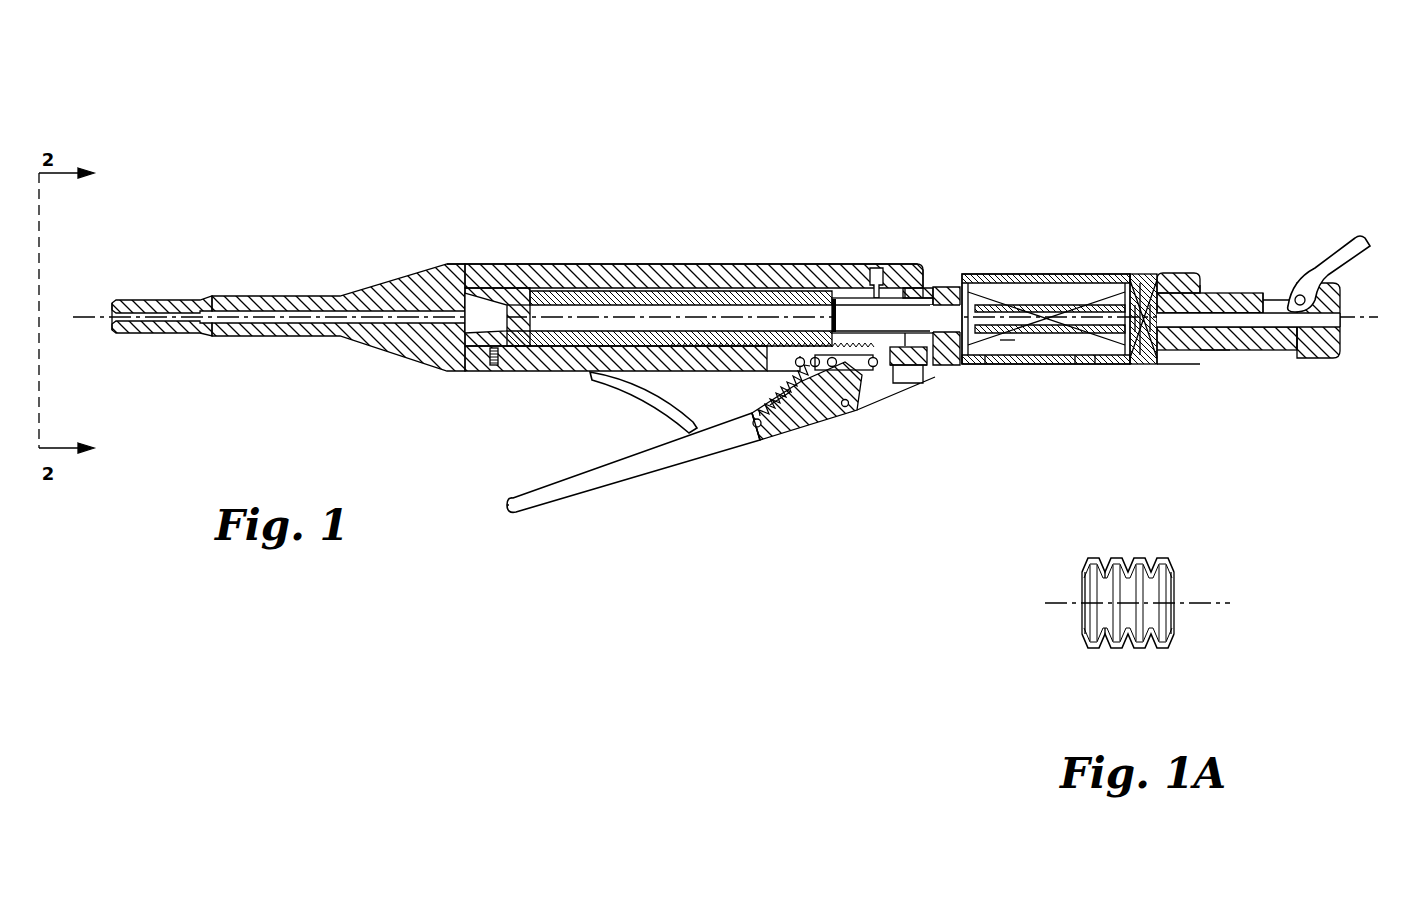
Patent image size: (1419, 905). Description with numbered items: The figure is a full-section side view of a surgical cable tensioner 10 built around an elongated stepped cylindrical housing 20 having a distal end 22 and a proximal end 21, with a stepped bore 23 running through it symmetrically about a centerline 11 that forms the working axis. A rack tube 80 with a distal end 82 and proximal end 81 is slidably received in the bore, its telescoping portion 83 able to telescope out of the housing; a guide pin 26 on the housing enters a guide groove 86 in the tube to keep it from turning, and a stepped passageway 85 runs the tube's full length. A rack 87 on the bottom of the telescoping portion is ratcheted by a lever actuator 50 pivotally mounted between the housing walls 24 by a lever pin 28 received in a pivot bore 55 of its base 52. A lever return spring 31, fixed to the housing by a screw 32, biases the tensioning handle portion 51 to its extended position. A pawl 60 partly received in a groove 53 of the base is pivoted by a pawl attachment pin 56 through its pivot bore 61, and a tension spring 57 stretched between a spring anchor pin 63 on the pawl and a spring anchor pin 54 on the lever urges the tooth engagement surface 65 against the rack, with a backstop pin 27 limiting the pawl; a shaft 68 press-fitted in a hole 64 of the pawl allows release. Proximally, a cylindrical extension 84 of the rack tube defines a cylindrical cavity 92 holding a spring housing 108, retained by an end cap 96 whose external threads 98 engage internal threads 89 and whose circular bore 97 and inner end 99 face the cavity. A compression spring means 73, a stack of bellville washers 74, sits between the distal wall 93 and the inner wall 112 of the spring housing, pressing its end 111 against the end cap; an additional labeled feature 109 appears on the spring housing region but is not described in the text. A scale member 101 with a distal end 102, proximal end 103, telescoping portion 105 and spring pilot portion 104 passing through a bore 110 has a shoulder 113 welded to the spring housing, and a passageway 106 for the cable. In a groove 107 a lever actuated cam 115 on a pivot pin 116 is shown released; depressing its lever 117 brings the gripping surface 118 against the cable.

In FIG. 1, the surgical cable tensioner 10 is at (1060, 102).
In FIG. 1, the centerline 11 is at (87, 318).
In FIG. 1A, the centerline 11 is at (1213, 603).
In FIG. 1, the housing 20 is at (500, 266).
In FIG. 1, the proximal end 21 is at (930, 275).
In FIG. 1, the distal end 22 is at (110, 336).
In FIG. 1, the stepped bore 23 is at (275, 305).
In FIG. 1, the housing walls 24 is at (872, 372).
In FIG. 1, the guide pin 26 is at (878, 268).
In FIG. 1, the backstop pin 27 is at (790, 375).
In FIG. 1, the lever pin 28 is at (828, 412).
In FIG. 1, the lever return spring 31 is at (598, 390).
In FIG. 1, the screw 32 is at (520, 386).
In FIG. 1, the lever actuator 50 is at (700, 452).
In FIG. 1, the tensioning handle portion 51 is at (545, 520).
In FIG. 1, the base 52 is at (820, 402).
In FIG. 1, the groove 53 is at (775, 420).
In FIG. 1, the spring anchor pin 54 is at (757, 428).
In FIG. 1, the pivot bore 55 is at (845, 408).
In FIG. 1, the pawl attachment pin 56 is at (853, 368).
In FIG. 1, the tension spring 57 is at (762, 432).
In FIG. 1, the pawl 60 is at (935, 362).
In FIG. 1, the pivot bore 61 is at (843, 298).
In FIG. 1, the spring anchor pin 63 is at (797, 404).
In FIG. 1, the hole 64 is at (895, 367).
In FIG. 1, the tooth engagement surface 65 is at (975, 282).
In FIG. 1, the shaft 68 is at (903, 272).
In FIG. 1, the compression spring means 73 is at (1020, 282).
In FIG. 1A, the compression spring means 73 is at (1180, 550).
In FIG. 1A, the bellville washers 74 is at (1083, 642).
In FIG. 1, the rack tube 80 is at (995, 280).
In FIG. 1, the proximal end 81 is at (1185, 372).
In FIG. 1, the distal end 82 is at (445, 367).
In FIG. 1, the telescoping portion 83 is at (490, 382).
In FIG. 1, the cylindrical extension 84 is at (1085, 282).
In FIG. 1, the stepped passageway 85 is at (575, 296).
In FIG. 1, the guide groove 86 is at (630, 300).
In FIG. 1, the rack 87 is at (710, 347).
In FIG. 1, the internal threads 89 is at (1188, 290).
In FIG. 1, the cylindrical cavity 92 is at (990, 357).
In FIG. 1, the distal wall 93 is at (965, 364).
In FIG. 1, the end cap 96 is at (1205, 290).
In FIG. 1, the circular bore 97 is at (1185, 306).
In FIG. 1, the external threads 98 is at (1160, 283).
In FIG. 1, the inner end 99 is at (1140, 283).
In FIG. 1, the scale member 101 is at (1240, 292).
In FIG. 1, the distal end 102 is at (955, 280).
In FIG. 1, the proximal end 103 is at (1350, 358).
In FIG. 1, the spring pilot portion 104 is at (1060, 282).
In FIG. 1, the telescoping portion 105 is at (1260, 362).
In FIG. 1, the passageway 106 is at (1005, 342).
In FIG. 1, the groove 107 is at (1270, 300).
In FIG. 1, the spring housing 108 is at (1100, 364).
In FIG. 1, the lower wall 109 is at (1080, 352).
In FIG. 1, the bore 110 is at (1210, 362).
In FIG. 1, the end 111 is at (1165, 367).
In FIG. 1, the inner wall 112 is at (1130, 300).
In FIG. 1, the shoulder 113 is at (1148, 286).
In FIG. 1, the lever actuated cam 115 is at (1345, 305).
In FIG. 1, the pivot pin 116 is at (1300, 332).
In FIG. 1, the lever 117 is at (1350, 245).
In FIG. 1, the gripping surface 118 is at (1320, 348).